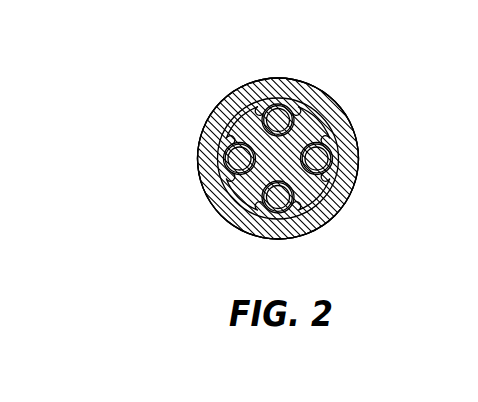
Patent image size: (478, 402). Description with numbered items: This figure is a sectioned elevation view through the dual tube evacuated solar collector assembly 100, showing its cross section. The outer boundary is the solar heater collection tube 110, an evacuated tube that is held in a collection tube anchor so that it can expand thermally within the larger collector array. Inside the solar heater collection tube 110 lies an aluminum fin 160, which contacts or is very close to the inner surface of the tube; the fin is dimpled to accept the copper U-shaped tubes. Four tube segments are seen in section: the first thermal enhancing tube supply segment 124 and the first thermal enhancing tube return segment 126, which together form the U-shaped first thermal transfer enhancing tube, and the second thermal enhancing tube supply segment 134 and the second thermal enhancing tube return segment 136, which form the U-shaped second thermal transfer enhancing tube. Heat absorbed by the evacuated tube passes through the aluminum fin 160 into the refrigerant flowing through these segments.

The dual tube evacuated solar collector assembly 100 is at (189, 68).
The solar heater collection tube 110 is at (338, 104).
The first thermal enhancing tube supply segment 124 is at (334, 158).
The first thermal enhancing tube return segment 126 is at (224, 160).
The second thermal enhancing tube supply segment 134 is at (277, 104).
The second thermal enhancing tube return segment 136 is at (280, 213).
The aluminum fin 160 is at (343, 204).